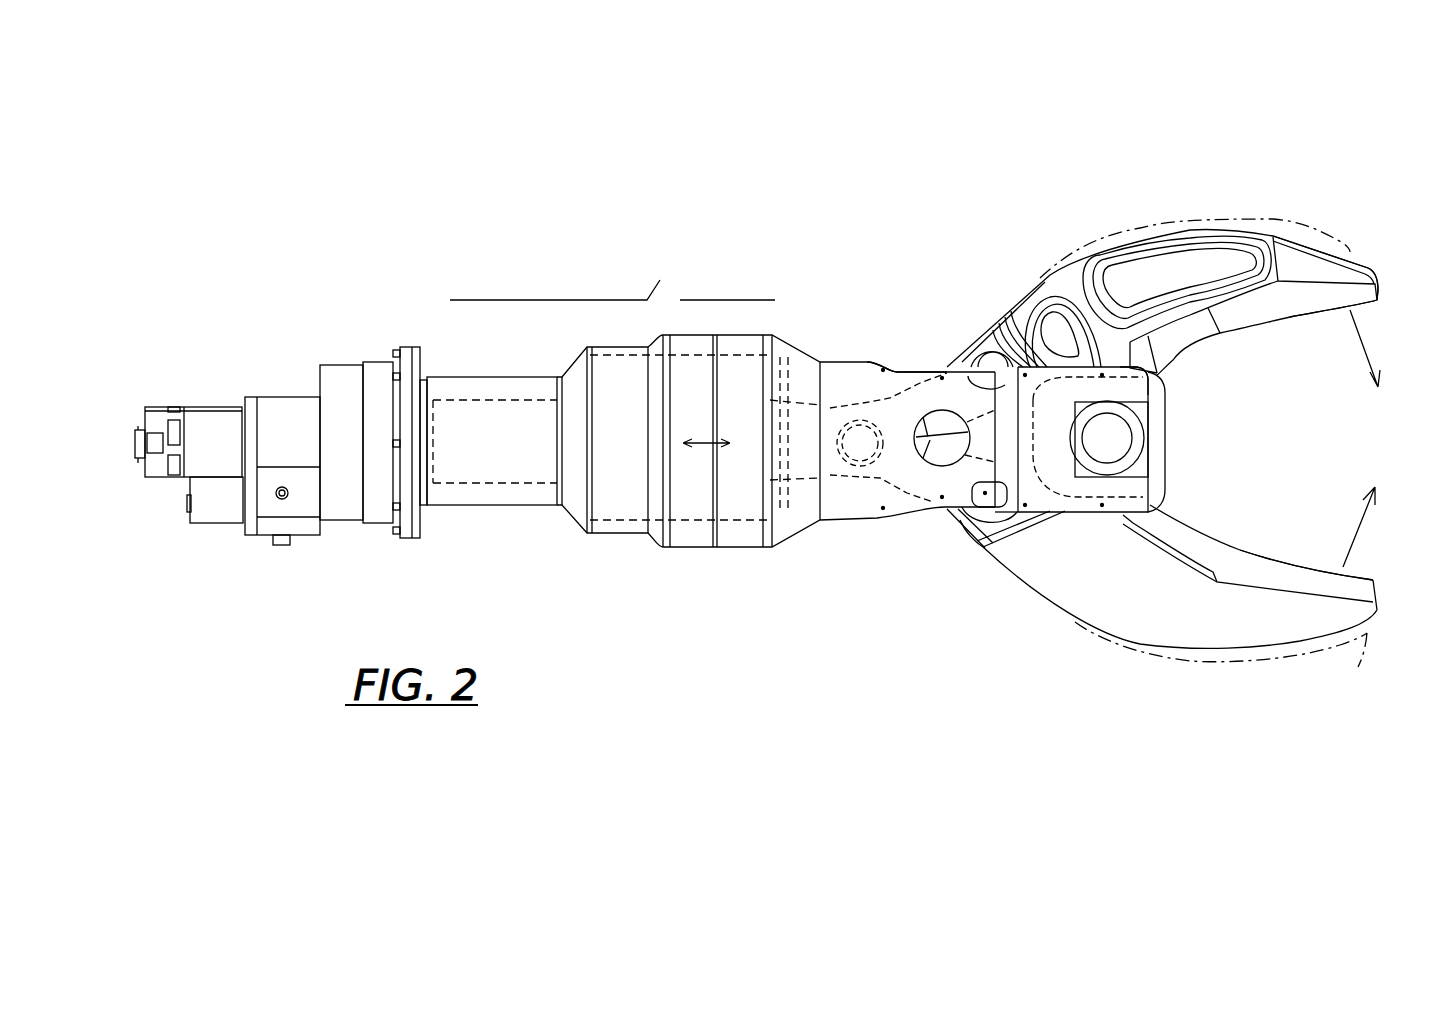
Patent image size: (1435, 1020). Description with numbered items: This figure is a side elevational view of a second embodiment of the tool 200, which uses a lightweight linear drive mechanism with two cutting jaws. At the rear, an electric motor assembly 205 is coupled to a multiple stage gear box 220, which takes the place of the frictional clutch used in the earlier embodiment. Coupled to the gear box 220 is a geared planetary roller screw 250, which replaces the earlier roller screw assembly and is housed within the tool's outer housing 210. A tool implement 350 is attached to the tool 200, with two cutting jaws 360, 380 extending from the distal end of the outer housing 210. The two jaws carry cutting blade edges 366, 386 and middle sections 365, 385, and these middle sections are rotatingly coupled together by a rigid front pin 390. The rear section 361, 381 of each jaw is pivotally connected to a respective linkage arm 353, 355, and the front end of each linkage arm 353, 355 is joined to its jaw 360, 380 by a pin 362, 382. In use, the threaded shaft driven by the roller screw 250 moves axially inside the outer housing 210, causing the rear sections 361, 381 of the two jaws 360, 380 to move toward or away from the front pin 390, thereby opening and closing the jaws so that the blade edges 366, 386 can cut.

The tool 200 is at (334, 130).
The electric motor assembly 205 is at (266, 355).
The multiple stage gear box 220 is at (368, 328).
The geared planetary roller screw 250 is at (680, 300).
The outer housing 210 is at (765, 548).
The tool implement 350 is at (1088, 200).
The linkage arm 353 is at (886, 510).
The linkage arm 355 is at (917, 387).
The rear section 361 is at (952, 500).
The pin 362 is at (982, 552).
The middle section 365 is at (1145, 478).
The cutting blade edge 366 is at (1250, 552).
The cutting jaw 360 is at (1160, 652).
The cutting jaw 380 is at (1313, 193).
The rear section 381 is at (947, 367).
The pin 382 is at (947, 367).
The middle section 385 is at (1137, 390).
The cutting blade edge 386 is at (1283, 315).
The front pin 390 is at (1122, 433).